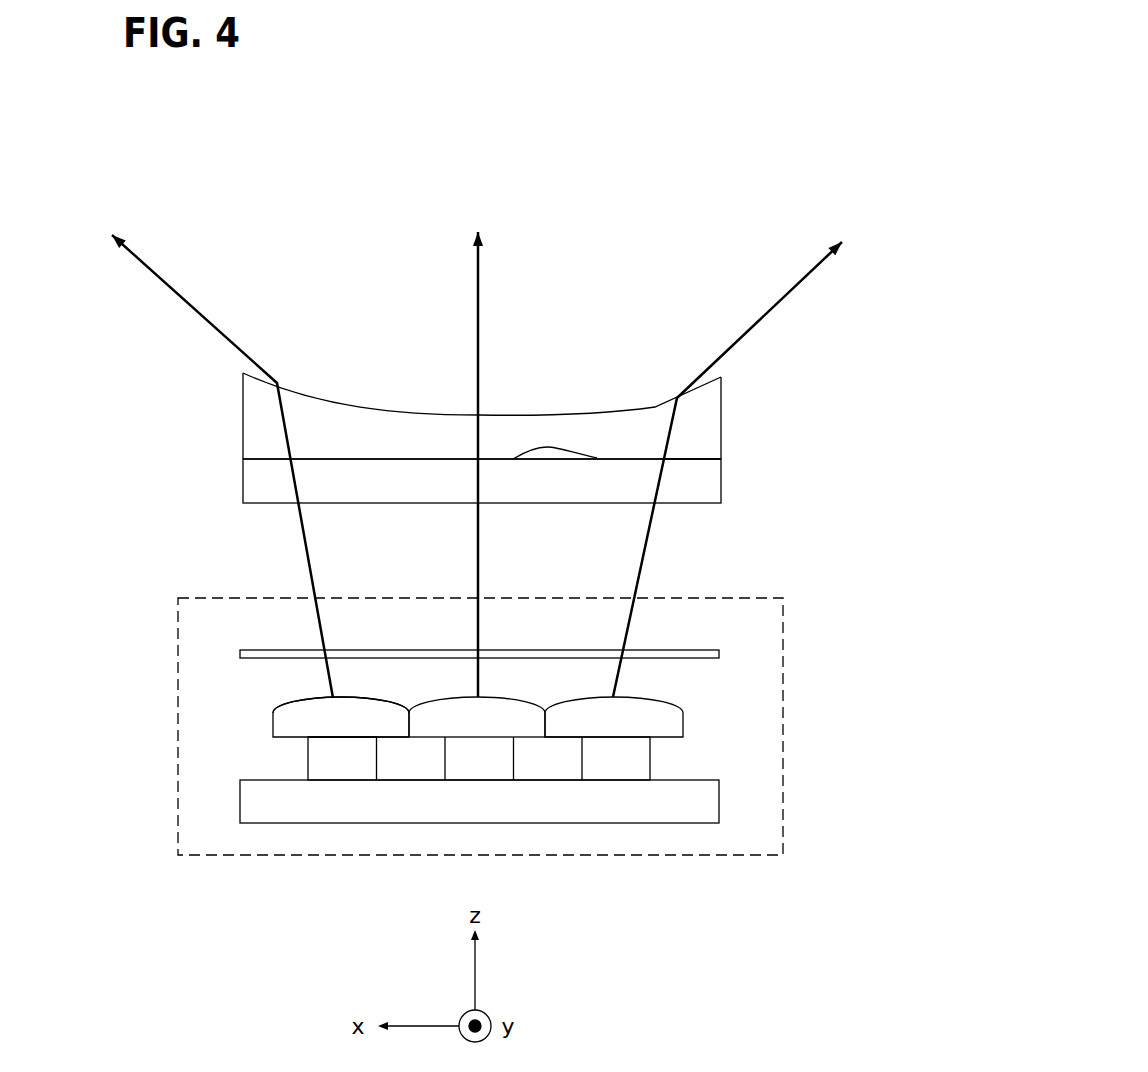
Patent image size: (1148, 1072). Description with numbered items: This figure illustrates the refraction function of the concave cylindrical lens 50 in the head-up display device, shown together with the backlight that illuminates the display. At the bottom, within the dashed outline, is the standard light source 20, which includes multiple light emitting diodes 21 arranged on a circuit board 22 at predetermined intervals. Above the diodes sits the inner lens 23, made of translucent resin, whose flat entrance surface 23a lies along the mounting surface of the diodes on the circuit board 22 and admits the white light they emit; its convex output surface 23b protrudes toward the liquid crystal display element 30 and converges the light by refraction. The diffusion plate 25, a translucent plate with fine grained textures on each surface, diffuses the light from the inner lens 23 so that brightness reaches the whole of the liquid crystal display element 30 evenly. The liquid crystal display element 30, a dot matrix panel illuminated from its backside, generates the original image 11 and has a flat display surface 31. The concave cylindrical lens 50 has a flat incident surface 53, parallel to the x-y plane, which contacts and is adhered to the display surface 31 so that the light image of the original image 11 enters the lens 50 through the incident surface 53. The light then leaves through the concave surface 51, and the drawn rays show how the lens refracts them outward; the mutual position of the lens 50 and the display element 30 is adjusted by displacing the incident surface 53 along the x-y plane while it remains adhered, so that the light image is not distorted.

The original image 11 is at (597, 458).
The standard light source 20 is at (783, 855).
The light emitting diode 21 is at (618, 770).
The circuit board 22 is at (613, 808).
The inner lens 23 is at (643, 718).
The entrance surface 23a is at (337, 738).
The output surface 23b is at (333, 697).
The diffusion plate 25 is at (673, 658).
The liquid crystal display element 30 is at (683, 497).
The display surface 31 is at (637, 460).
The concave cylindrical lens 50 is at (700, 425).
The concave surface 51 is at (643, 407).
The incident surface 53 is at (690, 462).